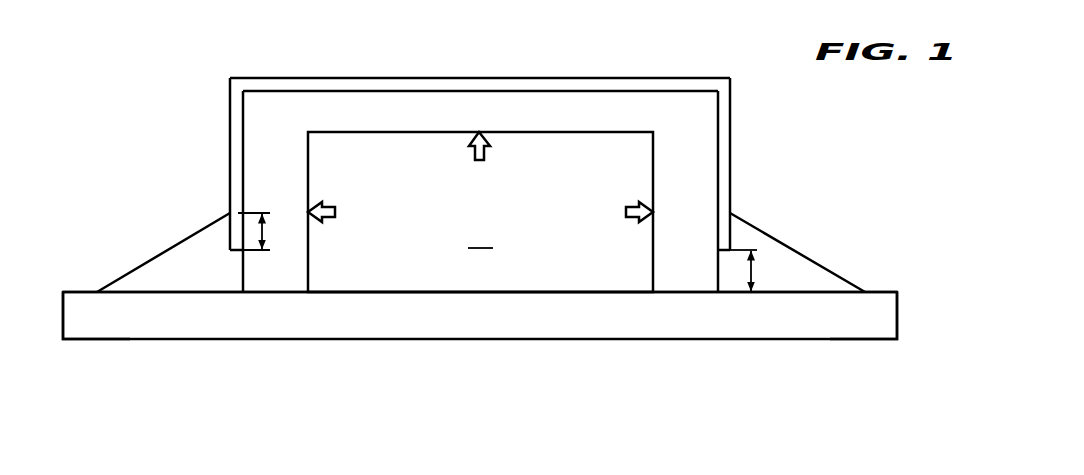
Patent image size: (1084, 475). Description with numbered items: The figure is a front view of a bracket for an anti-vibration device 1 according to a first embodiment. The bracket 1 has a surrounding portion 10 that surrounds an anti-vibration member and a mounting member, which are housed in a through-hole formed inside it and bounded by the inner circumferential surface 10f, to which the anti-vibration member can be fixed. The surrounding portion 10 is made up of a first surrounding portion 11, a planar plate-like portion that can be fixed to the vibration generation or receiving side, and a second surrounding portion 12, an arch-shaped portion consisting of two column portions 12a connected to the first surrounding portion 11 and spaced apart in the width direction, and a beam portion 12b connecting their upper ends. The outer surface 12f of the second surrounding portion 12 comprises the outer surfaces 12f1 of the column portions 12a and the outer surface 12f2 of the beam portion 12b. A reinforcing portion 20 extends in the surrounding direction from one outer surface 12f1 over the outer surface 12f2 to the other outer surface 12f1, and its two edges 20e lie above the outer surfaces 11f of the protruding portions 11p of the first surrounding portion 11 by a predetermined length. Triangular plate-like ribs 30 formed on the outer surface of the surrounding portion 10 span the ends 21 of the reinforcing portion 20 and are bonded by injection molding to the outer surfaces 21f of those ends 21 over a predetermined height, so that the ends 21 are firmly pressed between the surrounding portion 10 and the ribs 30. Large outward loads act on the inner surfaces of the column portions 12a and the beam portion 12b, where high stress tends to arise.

The bracket for an anti-vibration device 1 is at (200, 57).
The surrounding portion 10 is at (595, 340).
The inner circumferential surface 10f is at (308, 166).
The first surrounding portion 11 is at (433, 315).
The outer surface of protruding portion 11f is at (80, 292).
The protruding portion 11p is at (123, 318).
The reinforcing portion 20 is at (513, 78).
The edge of reinforcing portion 20e is at (233, 252).
The second surrounding portion 12 is at (484, 94).
The column portion 12a is at (277, 155).
The beam portion 12b is at (452, 110).
The outer surface of second surrounding portion 12f is at (478, 136).
The outer surface of column portion 12f1 is at (243, 172).
The outer surface of beam portion 12f2 is at (621, 90).
The end of reinforcing portion 21 is at (230, 229).
The outer surface of end of reinforcing portion 21f is at (231, 229).
The rib 30 is at (150, 255).